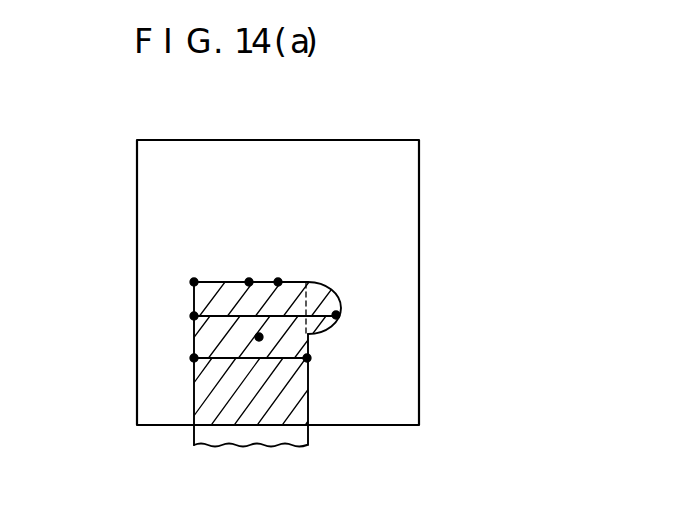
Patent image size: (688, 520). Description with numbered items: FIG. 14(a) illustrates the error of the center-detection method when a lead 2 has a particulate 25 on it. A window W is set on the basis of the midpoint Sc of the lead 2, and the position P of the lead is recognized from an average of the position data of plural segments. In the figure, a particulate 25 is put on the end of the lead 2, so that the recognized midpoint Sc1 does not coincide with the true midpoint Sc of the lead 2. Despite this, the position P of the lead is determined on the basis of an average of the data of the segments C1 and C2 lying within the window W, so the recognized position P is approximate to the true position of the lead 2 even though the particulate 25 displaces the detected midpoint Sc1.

The window W is at (137, 338).
The lead 2 is at (213, 382).
The particulate 25 is at (338, 293).
The midpoint of the lead Sc is at (249, 282).
The midpoint Sc1 is at (278, 282).
The segment C1 is at (316, 329).
The segment C2 is at (307, 358).
The position of the lead P is at (259, 337).